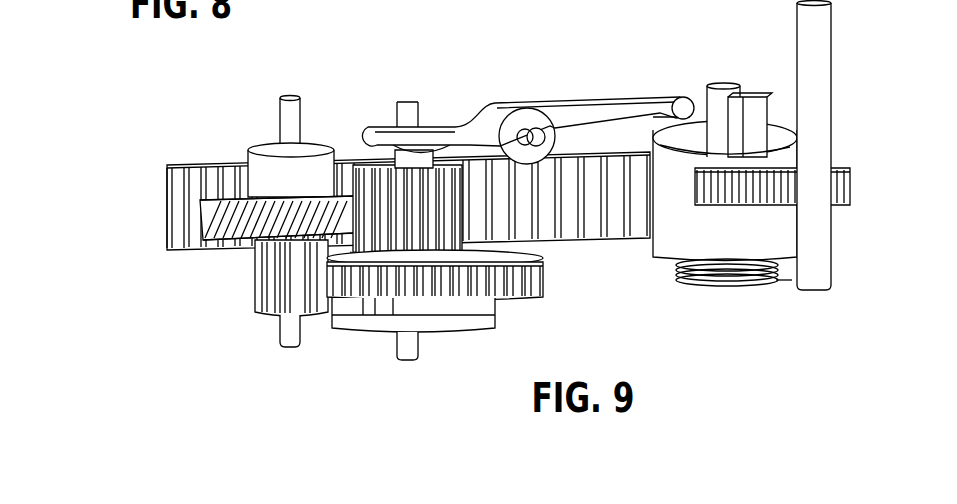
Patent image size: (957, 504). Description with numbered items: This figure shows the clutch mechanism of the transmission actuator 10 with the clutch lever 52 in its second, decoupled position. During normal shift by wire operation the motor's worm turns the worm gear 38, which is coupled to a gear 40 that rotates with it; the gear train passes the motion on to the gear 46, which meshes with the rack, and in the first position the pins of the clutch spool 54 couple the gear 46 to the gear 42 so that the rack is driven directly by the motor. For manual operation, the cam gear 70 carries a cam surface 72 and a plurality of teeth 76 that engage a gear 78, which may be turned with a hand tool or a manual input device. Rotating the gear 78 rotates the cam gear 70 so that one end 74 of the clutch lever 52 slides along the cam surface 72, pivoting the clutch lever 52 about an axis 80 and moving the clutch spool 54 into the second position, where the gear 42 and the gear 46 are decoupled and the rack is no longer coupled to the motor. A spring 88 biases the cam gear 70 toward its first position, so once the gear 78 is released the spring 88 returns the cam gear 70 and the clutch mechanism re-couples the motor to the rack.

The gear drive assembly 10 is at (864, 71).
The worm gear 38 is at (200, 203).
The gear 40 is at (255, 283).
The gear 42 is at (353, 292).
The gear 46 is at (350, 155).
The clutch lever 52 is at (588, 99).
The clutch spool 54 is at (447, 325).
The cam gear 70 is at (697, 238).
The cam surface 72 is at (680, 138).
The end of clutch lever 74 is at (680, 97).
The teeth 76 is at (748, 238).
The gear 78 is at (852, 185).
The axis 80 is at (533, 137).
The spring 88 is at (722, 275).